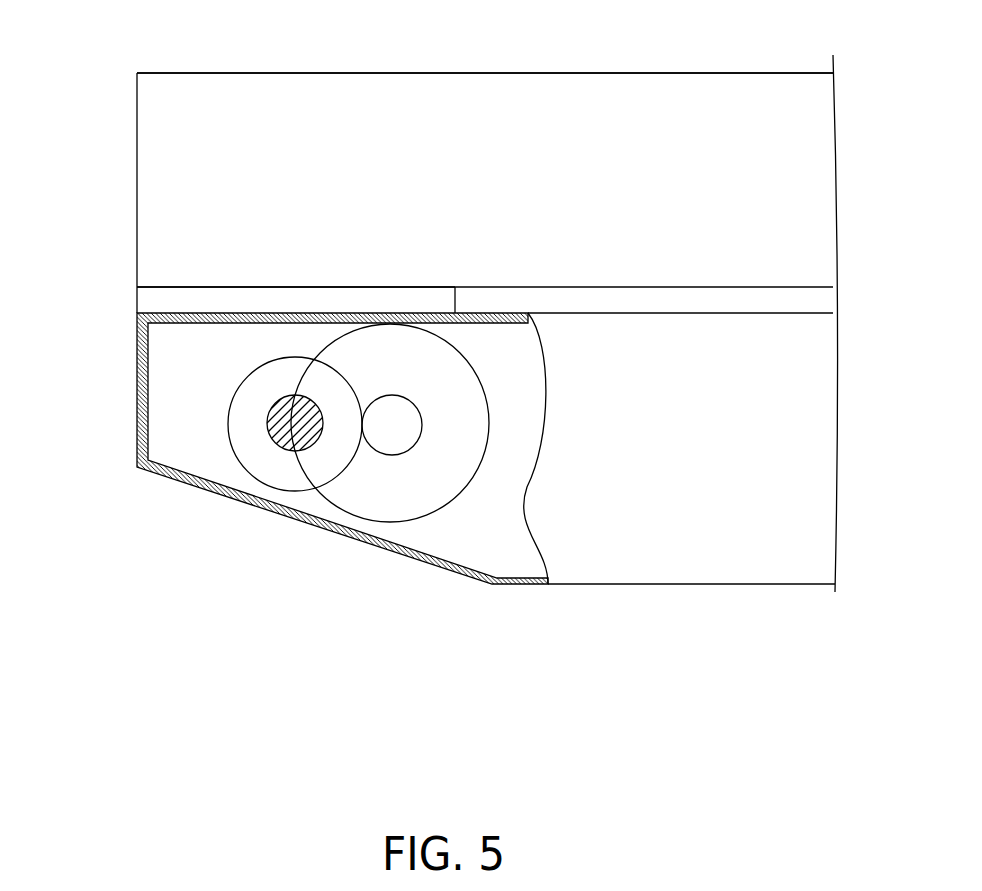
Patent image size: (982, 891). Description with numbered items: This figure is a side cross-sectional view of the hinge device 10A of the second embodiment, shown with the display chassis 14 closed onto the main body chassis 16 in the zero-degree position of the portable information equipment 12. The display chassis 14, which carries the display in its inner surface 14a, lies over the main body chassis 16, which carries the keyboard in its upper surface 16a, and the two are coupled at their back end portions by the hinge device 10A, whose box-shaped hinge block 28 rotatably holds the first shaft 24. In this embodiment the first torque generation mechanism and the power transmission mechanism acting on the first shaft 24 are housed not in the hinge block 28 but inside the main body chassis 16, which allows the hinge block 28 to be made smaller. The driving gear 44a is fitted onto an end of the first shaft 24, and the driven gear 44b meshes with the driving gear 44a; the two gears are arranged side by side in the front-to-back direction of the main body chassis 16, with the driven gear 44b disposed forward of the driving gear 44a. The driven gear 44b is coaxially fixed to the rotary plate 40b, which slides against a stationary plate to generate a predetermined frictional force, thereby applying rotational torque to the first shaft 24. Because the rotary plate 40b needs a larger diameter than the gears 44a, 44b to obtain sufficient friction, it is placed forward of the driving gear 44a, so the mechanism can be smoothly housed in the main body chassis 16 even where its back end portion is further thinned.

The portable information equipment 12 is at (177, 28).
The display chassis 14 is at (688, 71).
The main body chassis 16 is at (693, 586).
The inner surface 14a is at (712, 288).
The upper surface 16a is at (755, 312).
The hinge block 28 is at (167, 301).
The hinge device 10A is at (118, 350).
The driving gear 44a is at (238, 460).
The first shaft 24 is at (293, 445).
The driven gear 44b is at (388, 438).
The rotary plate 40b is at (462, 497).